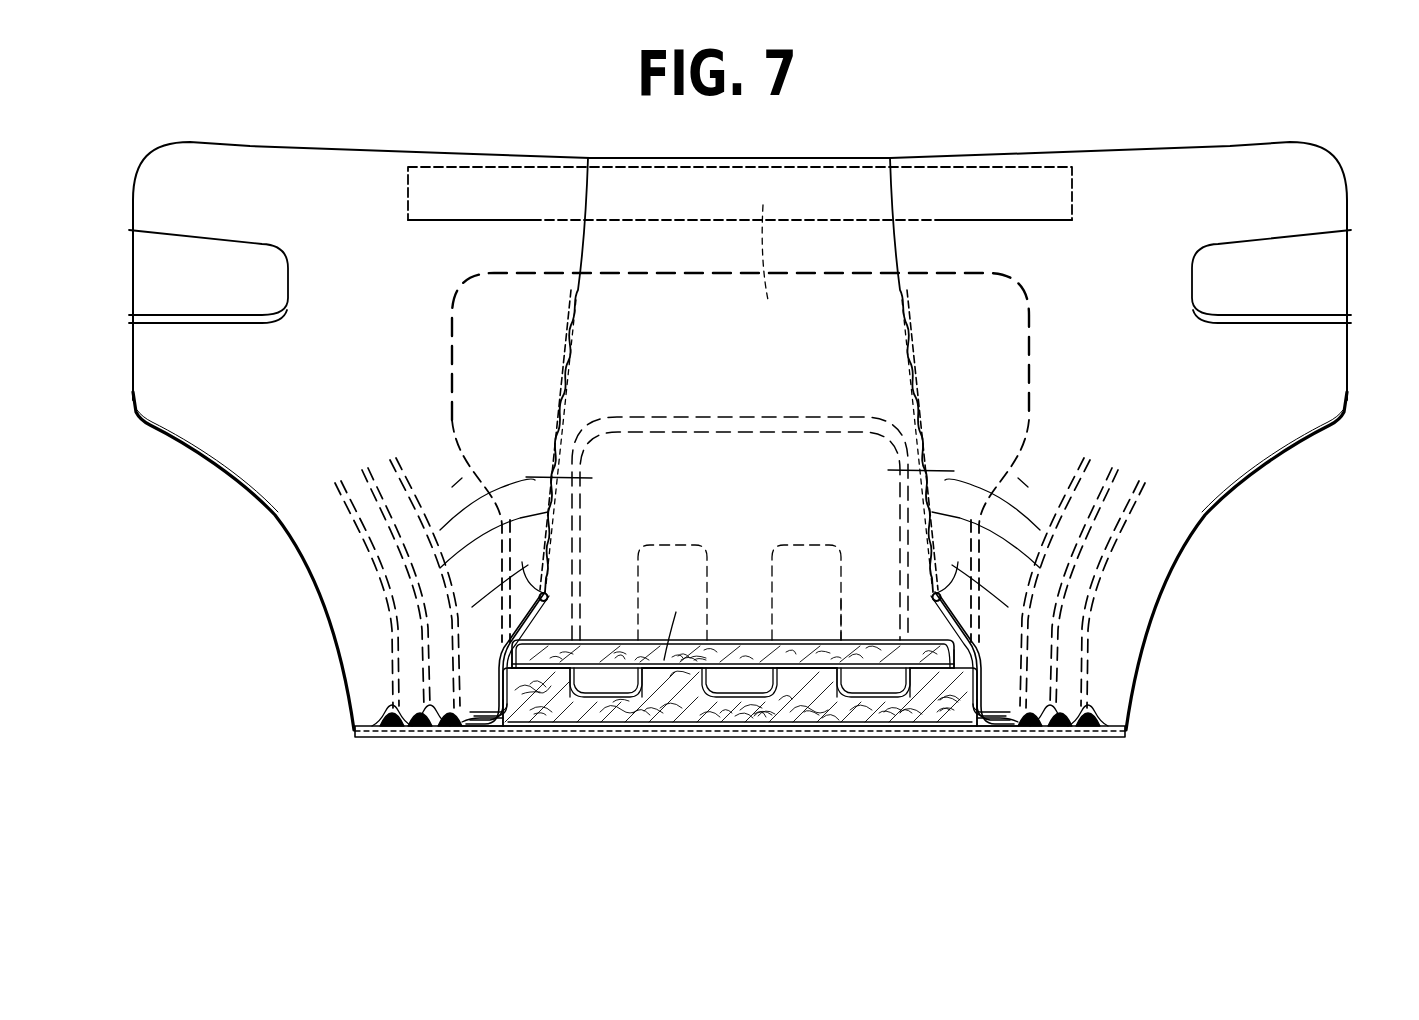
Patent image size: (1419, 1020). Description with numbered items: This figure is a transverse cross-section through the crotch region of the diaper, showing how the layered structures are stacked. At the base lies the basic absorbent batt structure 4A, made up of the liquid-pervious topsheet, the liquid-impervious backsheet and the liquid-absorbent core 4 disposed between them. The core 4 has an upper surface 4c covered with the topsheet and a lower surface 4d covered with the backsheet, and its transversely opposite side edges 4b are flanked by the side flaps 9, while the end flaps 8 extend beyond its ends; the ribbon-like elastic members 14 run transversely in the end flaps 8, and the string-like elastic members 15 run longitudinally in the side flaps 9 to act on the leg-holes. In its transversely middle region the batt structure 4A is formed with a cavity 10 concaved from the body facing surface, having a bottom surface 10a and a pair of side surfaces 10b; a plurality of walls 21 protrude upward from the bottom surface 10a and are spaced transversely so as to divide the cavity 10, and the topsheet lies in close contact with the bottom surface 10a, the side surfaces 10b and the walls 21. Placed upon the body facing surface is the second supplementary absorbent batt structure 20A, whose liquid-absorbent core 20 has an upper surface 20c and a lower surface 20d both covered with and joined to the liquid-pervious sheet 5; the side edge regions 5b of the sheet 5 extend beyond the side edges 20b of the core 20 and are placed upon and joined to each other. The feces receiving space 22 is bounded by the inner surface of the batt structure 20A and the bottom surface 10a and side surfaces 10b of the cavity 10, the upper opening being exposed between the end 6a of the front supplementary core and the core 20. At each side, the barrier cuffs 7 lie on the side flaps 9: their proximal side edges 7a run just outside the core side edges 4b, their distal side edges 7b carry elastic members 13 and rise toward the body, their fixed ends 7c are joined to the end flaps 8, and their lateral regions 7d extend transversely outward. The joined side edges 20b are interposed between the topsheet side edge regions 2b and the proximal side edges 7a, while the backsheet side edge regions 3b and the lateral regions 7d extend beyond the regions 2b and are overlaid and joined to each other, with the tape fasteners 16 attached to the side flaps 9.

The side edge regions of the topsheet 2b is at (496, 740).
The side edge regions of the backsheet 3b is at (367, 740).
The liquid-absorbent core 4 is at (688, 735).
The basic absorbent batt structure 4A is at (750, 735).
The side edges of the core 4b is at (516, 740).
The upper surface of the core 4c is at (540, 740).
The lower surface of the core 4d is at (663, 735).
The liquid-pervious sheet 5 is at (680, 660).
The side edge regions of the liquid-pervious sheet 5b is at (488, 738).
The ends of the core 6a is at (782, 241).
The barrier cuffs 7 is at (518, 426).
The proximal side edges of the cuffs 7a is at (471, 722).
The distal side edges of the cuffs 7b is at (740, 494).
The fixed ends of the cuffs 7c is at (543, 237).
The lateral regions of the cuffs 7d is at (372, 708).
The end flaps 8 is at (700, 237).
The side flaps 9 is at (245, 457).
The cavity 10 is at (765, 415).
The bottom surface of the cavity 10a is at (835, 735).
The side surfaces of the cavity 10b is at (588, 735).
The elastic members 13 is at (740, 559).
The ribbon-like elastic members 14 is at (841, 157).
The string-like elastic members 15 is at (450, 732).
The tape fasteners 16 is at (138, 257).
The liquid-absorbent core 20 is at (718, 640).
The second supplementary absorbent batt structure 20A is at (935, 735).
The side edges of the core 20b is at (530, 650).
The upper surface of the core 20c is at (805, 640).
The lower surface of the core 20d is at (845, 640).
The walls 21 is at (700, 735).
The feces receiving space 22 is at (652, 432).